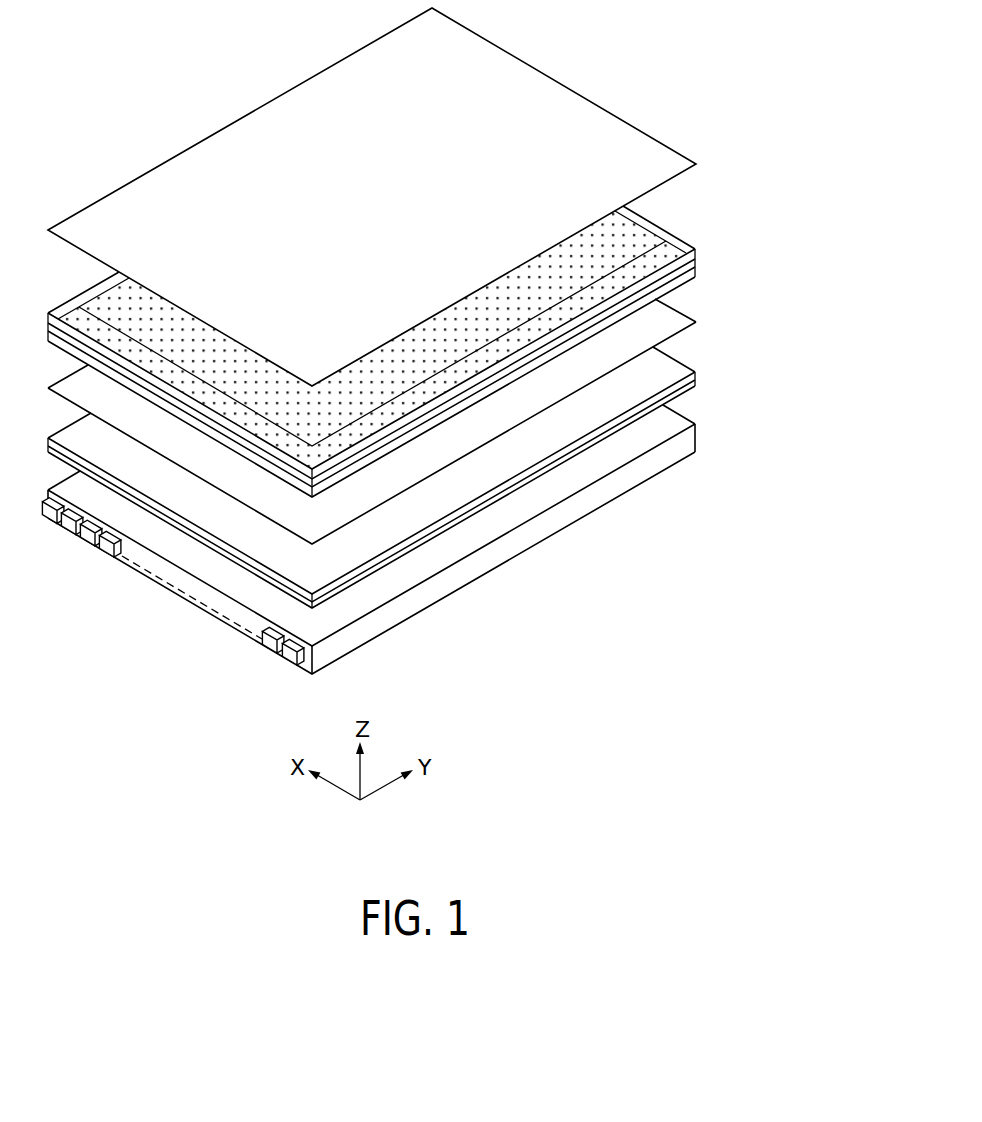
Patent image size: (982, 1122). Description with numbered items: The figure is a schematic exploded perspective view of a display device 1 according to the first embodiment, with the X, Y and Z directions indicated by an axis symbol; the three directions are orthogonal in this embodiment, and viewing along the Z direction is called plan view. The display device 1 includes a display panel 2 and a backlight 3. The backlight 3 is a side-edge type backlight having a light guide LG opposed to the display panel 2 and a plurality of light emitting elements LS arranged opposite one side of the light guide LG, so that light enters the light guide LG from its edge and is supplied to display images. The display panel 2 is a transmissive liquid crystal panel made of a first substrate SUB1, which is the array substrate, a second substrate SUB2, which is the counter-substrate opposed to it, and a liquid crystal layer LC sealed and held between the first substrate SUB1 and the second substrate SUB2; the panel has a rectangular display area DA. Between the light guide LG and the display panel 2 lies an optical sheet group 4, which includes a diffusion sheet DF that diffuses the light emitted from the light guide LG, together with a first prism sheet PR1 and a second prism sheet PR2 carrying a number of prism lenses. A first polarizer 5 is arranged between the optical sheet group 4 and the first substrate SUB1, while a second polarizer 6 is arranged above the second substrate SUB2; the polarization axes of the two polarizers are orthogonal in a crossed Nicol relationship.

The display device 1 is at (135, 153).
The display panel 2 is at (440, 336).
The backlight 3 is at (368, 552).
The optical sheet group 4 is at (433, 472).
The first polarizer 5 is at (690, 318).
The second polarizer 6 is at (665, 147).
The display area DA is at (650, 220).
The second substrate SUB2 is at (697, 247).
The liquid crystal layer LC is at (698, 262).
The first substrate SUB1 is at (697, 276).
The second prism sheet PR2 is at (697, 366).
The first prism sheet PR1 is at (699, 377).
The diffusion sheet DF is at (690, 396).
The light guide LG is at (383, 622).
The light emitting elements LS is at (264, 649).